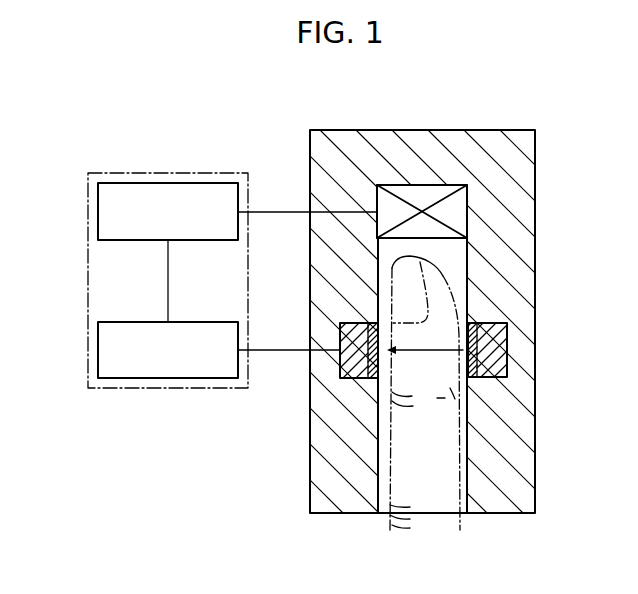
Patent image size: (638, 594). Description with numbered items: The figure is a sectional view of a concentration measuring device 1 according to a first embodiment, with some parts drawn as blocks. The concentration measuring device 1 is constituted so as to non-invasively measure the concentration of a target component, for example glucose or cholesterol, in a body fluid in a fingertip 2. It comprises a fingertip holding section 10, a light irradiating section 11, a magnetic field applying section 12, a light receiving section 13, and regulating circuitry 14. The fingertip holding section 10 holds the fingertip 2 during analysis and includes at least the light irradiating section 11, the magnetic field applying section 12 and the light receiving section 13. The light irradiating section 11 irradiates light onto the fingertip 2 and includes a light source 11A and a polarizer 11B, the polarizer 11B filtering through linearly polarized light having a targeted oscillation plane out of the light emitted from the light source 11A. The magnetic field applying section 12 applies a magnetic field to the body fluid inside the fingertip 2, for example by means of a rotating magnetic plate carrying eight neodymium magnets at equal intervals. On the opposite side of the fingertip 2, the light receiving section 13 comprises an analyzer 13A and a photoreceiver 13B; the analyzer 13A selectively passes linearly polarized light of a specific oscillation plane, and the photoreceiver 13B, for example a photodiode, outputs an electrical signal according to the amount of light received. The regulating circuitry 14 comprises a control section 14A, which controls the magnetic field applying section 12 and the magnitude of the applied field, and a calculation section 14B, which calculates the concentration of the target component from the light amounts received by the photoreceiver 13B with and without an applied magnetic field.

The concentration measuring device 1 is at (281, 127).
The fingertip 2 is at (443, 275).
The fingertip holding section 10 is at (536, 211).
The light irradiating section 11 is at (535, 342).
The light source 11A is at (490, 378).
The polarizer 11B is at (477, 322).
The magnetic field applying section 12 is at (421, 192).
The light receiving section 13 is at (315, 362).
The analyzer 13A is at (372, 378).
The photoreceiver 13B is at (347, 323).
The regulating circuitry 14 is at (137, 260).
The control section 14A is at (190, 183).
The calculation section 14B is at (192, 322).